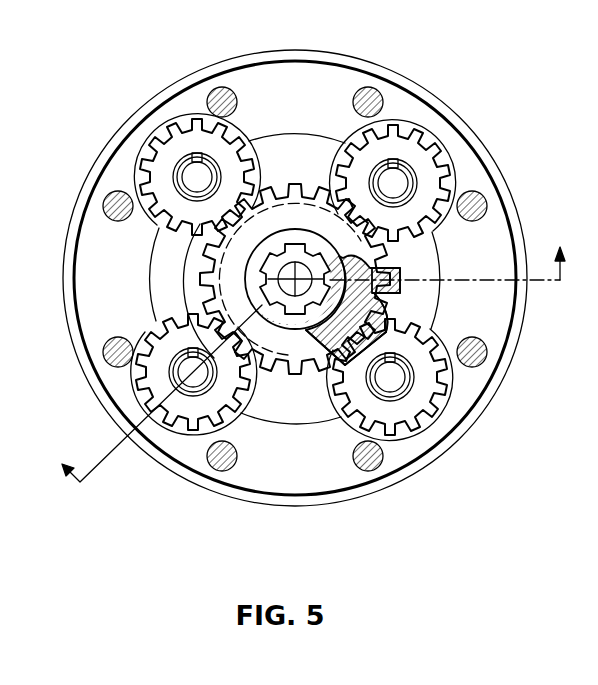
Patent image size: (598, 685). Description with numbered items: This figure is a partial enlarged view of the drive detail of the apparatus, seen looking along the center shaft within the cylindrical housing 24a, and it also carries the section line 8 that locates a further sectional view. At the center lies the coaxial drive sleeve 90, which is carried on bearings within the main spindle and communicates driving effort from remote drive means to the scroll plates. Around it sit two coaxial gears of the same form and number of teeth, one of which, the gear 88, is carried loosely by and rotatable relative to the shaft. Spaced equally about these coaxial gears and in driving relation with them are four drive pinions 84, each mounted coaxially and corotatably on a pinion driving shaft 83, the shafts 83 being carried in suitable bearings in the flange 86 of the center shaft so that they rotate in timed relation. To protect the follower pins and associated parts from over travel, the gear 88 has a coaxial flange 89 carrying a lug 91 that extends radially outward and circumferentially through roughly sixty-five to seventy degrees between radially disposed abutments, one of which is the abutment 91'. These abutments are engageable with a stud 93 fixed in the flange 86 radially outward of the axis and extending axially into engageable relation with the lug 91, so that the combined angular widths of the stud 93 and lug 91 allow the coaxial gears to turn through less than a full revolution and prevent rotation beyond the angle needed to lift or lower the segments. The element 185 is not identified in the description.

The cylindrical housing 24a is at (403, 76).
The flange 86 is at (93, 233).
The coaxial gear 88 is at (257, 420).
The coaxial flange 89 is at (306, 178).
The drive pinion 84 is at (180, 120).
The pinion driving shaft 83 is at (194, 176).
The bearing ring 185 is at (250, 259).
The coaxial drive sleeve 90 is at (255, 284).
The lug 91 is at (435, 310).
The radially disposed abutment 91' is at (473, 309).
The stud 93 is at (400, 270).
The section line 8- 8 is at (304, 356).